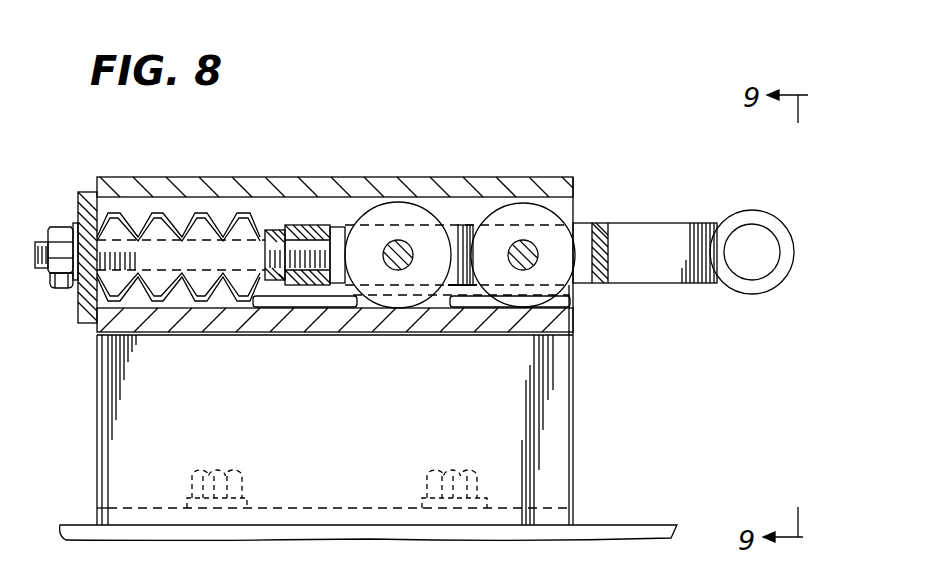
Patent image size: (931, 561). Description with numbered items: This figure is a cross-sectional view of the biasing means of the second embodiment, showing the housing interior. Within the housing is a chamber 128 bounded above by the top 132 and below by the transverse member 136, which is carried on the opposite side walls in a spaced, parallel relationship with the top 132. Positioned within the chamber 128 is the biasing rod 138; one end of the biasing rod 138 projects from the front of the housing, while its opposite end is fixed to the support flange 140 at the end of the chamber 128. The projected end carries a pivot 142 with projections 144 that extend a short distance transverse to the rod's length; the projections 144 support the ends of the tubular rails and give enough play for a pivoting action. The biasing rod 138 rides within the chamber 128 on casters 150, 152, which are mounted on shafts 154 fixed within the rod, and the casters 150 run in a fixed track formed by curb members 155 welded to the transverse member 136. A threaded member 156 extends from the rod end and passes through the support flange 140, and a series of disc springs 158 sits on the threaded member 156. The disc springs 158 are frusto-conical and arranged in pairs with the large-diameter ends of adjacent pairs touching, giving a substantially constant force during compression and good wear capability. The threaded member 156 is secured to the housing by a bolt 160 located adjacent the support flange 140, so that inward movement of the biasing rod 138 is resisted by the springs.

The chamber 128 is at (565, 213).
The top 132 is at (306, 185).
The transverse member 136 is at (307, 318).
The biasing rod 138 is at (645, 228).
The support flange 140 is at (96, 187).
The pivot 142 is at (776, 175).
The projections 144 is at (757, 275).
The caster 150 is at (513, 218).
The caster 152 is at (389, 215).
The shaft 154 is at (523, 263).
The curb member 155 is at (272, 302).
The threaded member 156 is at (46, 242).
The disc springs 158 is at (240, 230).
The bolt 160 is at (62, 289).